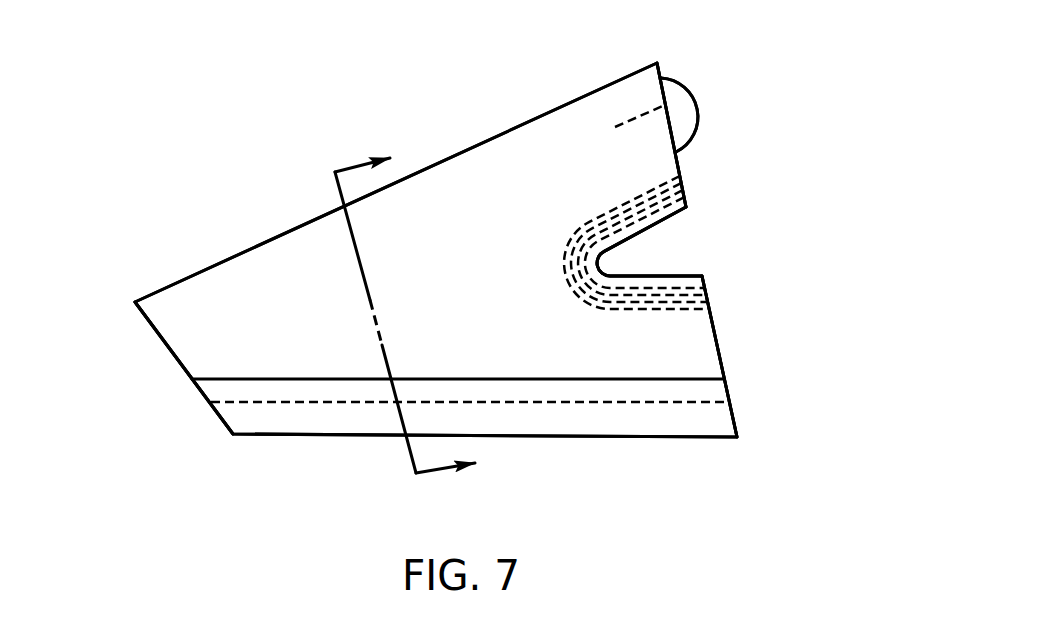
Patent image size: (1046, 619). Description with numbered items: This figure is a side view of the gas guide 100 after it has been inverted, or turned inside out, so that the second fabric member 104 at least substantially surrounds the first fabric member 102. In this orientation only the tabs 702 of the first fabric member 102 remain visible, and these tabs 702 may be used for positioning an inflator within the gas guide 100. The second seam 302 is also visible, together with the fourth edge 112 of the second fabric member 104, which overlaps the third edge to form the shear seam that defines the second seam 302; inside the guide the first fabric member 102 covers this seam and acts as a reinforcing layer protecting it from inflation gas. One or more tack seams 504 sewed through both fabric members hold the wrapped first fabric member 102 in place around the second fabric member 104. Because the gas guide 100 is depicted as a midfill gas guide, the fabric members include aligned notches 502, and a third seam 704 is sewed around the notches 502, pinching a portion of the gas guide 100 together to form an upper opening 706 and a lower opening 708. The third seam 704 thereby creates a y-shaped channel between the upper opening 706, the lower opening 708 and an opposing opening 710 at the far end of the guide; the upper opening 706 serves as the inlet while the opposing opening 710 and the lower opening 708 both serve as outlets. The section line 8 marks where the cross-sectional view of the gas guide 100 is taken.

The gas guide 100 is at (408, 138).
The first fabric member 102 is at (682, 107).
The second fabric member 104 is at (277, 288).
The fourth edge 112 is at (320, 378).
The second seam 302 is at (347, 403).
The notches 502 is at (668, 250).
The tack seams 504 is at (642, 113).
The tabs 702 is at (707, 118).
The third seam 704 is at (688, 299).
The upper opening 706 is at (715, 160).
The lower opening 708 is at (738, 353).
The opposing opening 710 is at (160, 370).
The section line 8- 8 is at (391, 329).